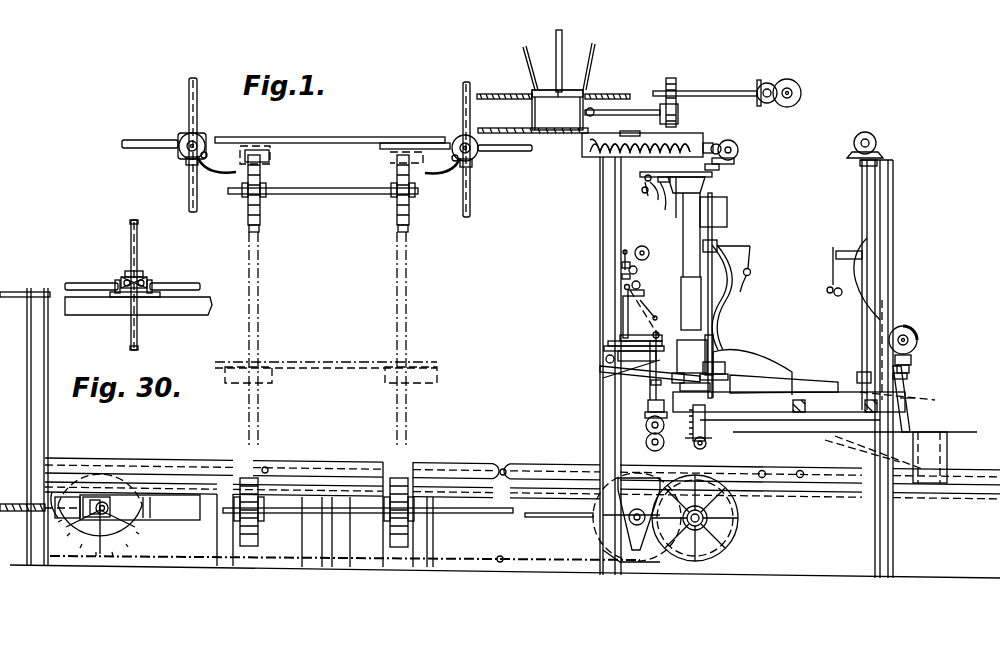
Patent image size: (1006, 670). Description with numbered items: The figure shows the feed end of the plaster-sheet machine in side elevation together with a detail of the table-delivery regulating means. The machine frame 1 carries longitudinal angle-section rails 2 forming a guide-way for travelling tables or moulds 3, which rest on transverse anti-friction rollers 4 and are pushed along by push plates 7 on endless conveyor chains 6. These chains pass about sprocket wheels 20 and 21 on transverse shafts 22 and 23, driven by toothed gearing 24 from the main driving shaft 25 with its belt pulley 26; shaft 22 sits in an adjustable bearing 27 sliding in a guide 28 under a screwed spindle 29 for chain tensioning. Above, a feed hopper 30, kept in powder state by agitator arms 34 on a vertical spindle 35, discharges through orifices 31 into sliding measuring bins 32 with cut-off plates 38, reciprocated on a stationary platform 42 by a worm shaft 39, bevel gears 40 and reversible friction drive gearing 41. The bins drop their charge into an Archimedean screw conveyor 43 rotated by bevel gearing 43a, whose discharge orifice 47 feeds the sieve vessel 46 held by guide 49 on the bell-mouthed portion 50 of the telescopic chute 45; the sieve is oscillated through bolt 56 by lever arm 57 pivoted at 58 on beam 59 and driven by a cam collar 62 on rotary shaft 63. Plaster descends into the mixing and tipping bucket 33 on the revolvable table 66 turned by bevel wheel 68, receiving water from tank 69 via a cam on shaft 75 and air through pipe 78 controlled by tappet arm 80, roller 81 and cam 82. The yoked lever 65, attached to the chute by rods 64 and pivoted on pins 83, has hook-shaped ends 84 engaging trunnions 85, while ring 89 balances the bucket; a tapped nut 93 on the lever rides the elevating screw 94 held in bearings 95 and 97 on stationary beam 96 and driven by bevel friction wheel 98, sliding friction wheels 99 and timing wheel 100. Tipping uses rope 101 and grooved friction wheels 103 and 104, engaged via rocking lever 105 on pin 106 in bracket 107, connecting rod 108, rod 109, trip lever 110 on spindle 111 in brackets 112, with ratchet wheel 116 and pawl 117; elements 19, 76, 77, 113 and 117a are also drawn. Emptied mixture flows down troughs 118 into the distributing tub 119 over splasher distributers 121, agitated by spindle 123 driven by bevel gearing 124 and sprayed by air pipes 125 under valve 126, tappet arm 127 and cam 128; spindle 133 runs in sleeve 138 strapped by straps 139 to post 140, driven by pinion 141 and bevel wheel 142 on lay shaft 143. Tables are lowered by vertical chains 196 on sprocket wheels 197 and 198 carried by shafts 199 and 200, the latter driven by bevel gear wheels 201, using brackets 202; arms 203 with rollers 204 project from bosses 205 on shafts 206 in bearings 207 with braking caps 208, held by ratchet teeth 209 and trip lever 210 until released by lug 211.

In FIG. 1, the machine frame 1 is at (565, 494).
In FIG. 1, the angle-section metal rails 2 is at (544, 466).
In FIG. 1, the tables or moulds 3 is at (340, 138).
In FIG. 1, the anti-friction rollers 4 is at (764, 471).
In FIG. 1, the endless travelling conveyor chains 6 is at (265, 467).
In FIG. 1, the push plates 7 is at (210, 461).
In FIG. 1, the rod 19 is at (717, 250).
In FIG. 1, the sprocket wheels 20 is at (143, 537).
In FIG. 1, the sprocket wheels 21 is at (594, 530).
In FIG. 1, the transverse shaft 22 is at (106, 504).
In FIG. 1, the transverse shaft 23 is at (637, 526).
In FIG. 1, the toothed gearing 24 is at (730, 548).
In FIG. 1, the main driving shaft 25 is at (708, 520).
In FIG. 1, the pulley 26 is at (728, 536).
In FIG. 1, the adjustable bearing 27 is at (96, 500).
In FIG. 1, the guide 28 is at (176, 515).
In FIG. 1, the screwed spindle 29 is at (55, 496).
In FIG. 1, the feed hopper 30 is at (588, 59).
In FIG. 1, the delivery orifices 31 is at (590, 94).
In FIG. 1, the measuring bins 32 is at (557, 110).
In FIG. 1, the combined mixing and tipping bucket 33 is at (713, 345).
In FIG. 1, the agitator arms 34 is at (532, 80).
In FIG. 1, the vertical spindle 35 is at (556, 33).
In FIG. 1, the cut-off plate 38 is at (507, 94).
In FIG. 1, the worm shaft 39 is at (630, 110).
In FIG. 1, the bevel gears 40 is at (678, 96).
In FIG. 1, the time-controlled reversible friction drive gearing 41 is at (780, 107).
In FIG. 1, the stationary platform 42 is at (566, 134).
In FIG. 1, the Archimedean screw conveyor 43 is at (680, 140).
In FIG. 1, the bevel gearing 43a is at (718, 144).
In FIG. 1, the telescopic delivery chute 45 is at (683, 238).
In FIG. 1, the cylindrical vessel 46 is at (720, 164).
In FIG. 1, the discharge orifice 47 is at (732, 158).
In FIG. 1, the guide 49 is at (718, 170).
In FIG. 1, the bell-mouthed portion 50 is at (700, 189).
In FIG. 1, the bolt 56 is at (664, 177).
In FIG. 1, the lever arm 57 is at (672, 202).
In FIG. 1, the pivot 58 is at (648, 172).
In FIG. 1, the beam 59 is at (653, 201).
In FIG. 1, the collar 62 is at (650, 195).
In FIG. 1, the rotary shaft 63 is at (642, 190).
In FIG. 1, the rods 64 is at (707, 347).
In FIG. 1, the yoked lever 65 is at (600, 370).
In FIG. 1, the table 66 is at (689, 423).
In FIG. 1, the bevel wheel 68 is at (694, 446).
In FIG. 1, the tank 69 is at (727, 211).
In FIG. 1, the revolvable shaft 75 is at (724, 302).
In FIG. 1, the rod 76 is at (726, 315).
In FIG. 1, the block 77 is at (681, 305).
In FIG. 1, the pipe 78 is at (735, 352).
In FIG. 1, the tappet arm 80 is at (748, 247).
In FIG. 1, the friction roller 81 is at (752, 270).
In FIG. 1, the adjustable cam 82 is at (745, 289).
In FIG. 1, the pins 83 is at (606, 359).
In FIG. 1, the hook-shaped ends 84 is at (725, 370).
In FIG. 1, the trunnions 85 is at (680, 387).
In FIG. 1, the angular metal ring 89 is at (740, 403).
In FIG. 1, the tapped nut 93 is at (652, 356).
In FIG. 1, the elevating screw 94 is at (651, 383).
In FIG. 1, the bearing 95 is at (659, 335).
In FIG. 1, the stationary beam 96 is at (604, 349).
In FIG. 1, the bearing 97 is at (648, 405).
In FIG. 1, the bevel friction wheel 98 is at (645, 415).
In FIG. 1, the sliding friction wheels 99 is at (646, 425).
In FIG. 1, the timing wheel 100 is at (646, 442).
In FIG. 1, the rope 101 is at (656, 320).
In FIG. 1, the grooved friction wheel 103 is at (642, 246).
In FIG. 1, the grooved friction wheel 104 is at (644, 293).
In FIG. 1, the rocking lever 105 is at (608, 342).
In FIG. 1, the pin 106 is at (620, 336).
In FIG. 1, the bracket 107 is at (637, 351).
In FIG. 1, the connecting rod 108 is at (603, 378).
In FIG. 1, the rod 109 is at (623, 305).
In FIG. 1, the trip lever 110 is at (622, 265).
In FIG. 1, the spindle 111 is at (622, 277).
In FIG. 1, the brackets 112 is at (625, 288).
In FIG. 1, the roller 113 is at (640, 284).
In FIG. 1, the ratchet wheel 116 is at (637, 270).
In FIG. 1, the pivoted pawl 117 is at (623, 252).
In FIG. 1, the link 117a is at (648, 312).
In FIG. 1, the inclined troughs 118 is at (805, 380).
In FIG. 1, the stationary distributing tub 119 is at (912, 424).
In FIG. 1, the splasher distributers 121 is at (855, 447).
In FIG. 1, the vertical spindle 123 is at (862, 187).
In FIG. 1, the overhead bevel gearing 124 is at (874, 146).
In FIG. 1, the pipes 125 is at (911, 398).
In FIG. 1, the valve 126 is at (845, 255).
In FIG. 1, the tappet arm 127 is at (833, 255).
In FIG. 1, the cam 128 is at (837, 297).
In FIG. 1, the vertical spindle 133 is at (910, 368).
In FIG. 1, the stationary sleeve 138 is at (906, 386).
In FIG. 1, the straps 139 is at (908, 376).
In FIG. 1, the vertical posts 140 is at (880, 351).
In FIG. 1, the bevel pinion 141 is at (912, 358).
In FIG. 1, the bevel wheel 142 is at (905, 326).
In FIG. 1, the horizontal lay shaft 143 is at (915, 332).
In FIG. 1, the conveyor chains 196 is at (259, 291).
In FIG. 1, the sprocket wheels 197 is at (261, 211).
In FIG. 1, the sprocket wheels 198 is at (262, 530).
In FIG. 1, the horizontal shaft 199 is at (330, 195).
In FIG. 1, the horizontal shaft 200 is at (430, 514).
In FIG. 1, the bevel gear wheels 201 is at (660, 562).
In FIG. 1, the metal brackets 202 is at (270, 157).
In FIG. 1, the arms 203 is at (204, 137).
In FIG. 1, the rollers 204 is at (189, 100).
In FIG. 30, the rollers 204 is at (130, 233).
In FIG. 1, the bosses 205 is at (180, 150).
In FIG. 1, the transverse shafts 206 is at (182, 136).
In FIG. 30, the transverse shafts 206 is at (122, 278).
In FIG. 30, the bearings 207 is at (106, 297).
In FIG. 30, the adjustable caps 208 is at (145, 278).
In FIG. 1, the ratchet teeth 209 is at (186, 162).
In FIG. 1, the pivoted trip lever 210 is at (215, 170).
In FIG. 1, the lug 211 is at (250, 146).